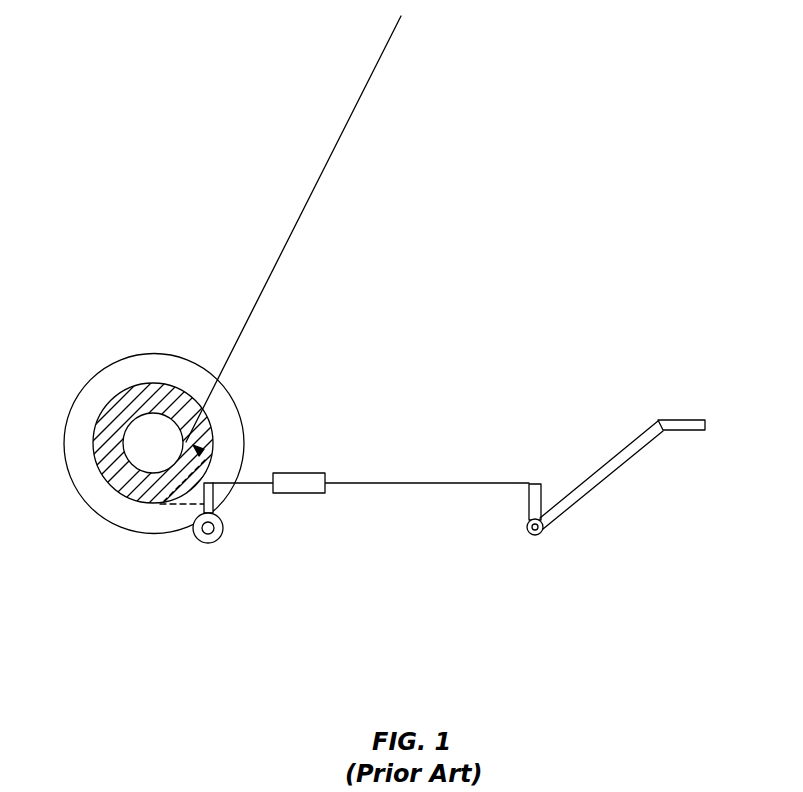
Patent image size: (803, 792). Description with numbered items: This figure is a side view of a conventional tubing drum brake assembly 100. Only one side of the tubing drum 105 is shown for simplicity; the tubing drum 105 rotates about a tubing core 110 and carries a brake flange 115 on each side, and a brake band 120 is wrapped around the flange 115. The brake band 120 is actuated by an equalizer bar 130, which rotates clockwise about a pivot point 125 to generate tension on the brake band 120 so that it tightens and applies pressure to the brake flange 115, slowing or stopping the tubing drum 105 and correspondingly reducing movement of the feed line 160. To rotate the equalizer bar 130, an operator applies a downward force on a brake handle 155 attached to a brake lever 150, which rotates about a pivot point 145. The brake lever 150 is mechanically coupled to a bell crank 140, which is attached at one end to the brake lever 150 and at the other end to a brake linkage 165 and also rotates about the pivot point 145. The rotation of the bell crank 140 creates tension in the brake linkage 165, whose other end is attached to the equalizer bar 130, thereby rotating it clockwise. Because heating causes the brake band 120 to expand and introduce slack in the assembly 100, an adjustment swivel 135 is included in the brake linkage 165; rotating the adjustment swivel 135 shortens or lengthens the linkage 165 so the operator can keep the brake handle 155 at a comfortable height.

The tubing drum brake assembly 100 is at (590, 106).
The tubing drum 105 is at (133, 355).
The tubing core 110 is at (130, 427).
The brake flange 115 is at (100, 470).
The brake band 120 is at (185, 504).
The pivot point 125 is at (208, 546).
The equalizer bar 130 is at (217, 500).
The adjustment swivel 135 is at (298, 473).
The bell crank 140 is at (535, 484).
The pivot point 145 is at (535, 537).
The brake lever 150 is at (628, 445).
The brake handle 155 is at (707, 425).
The feed line 160 is at (335, 142).
The brake linkage 165 is at (377, 483).